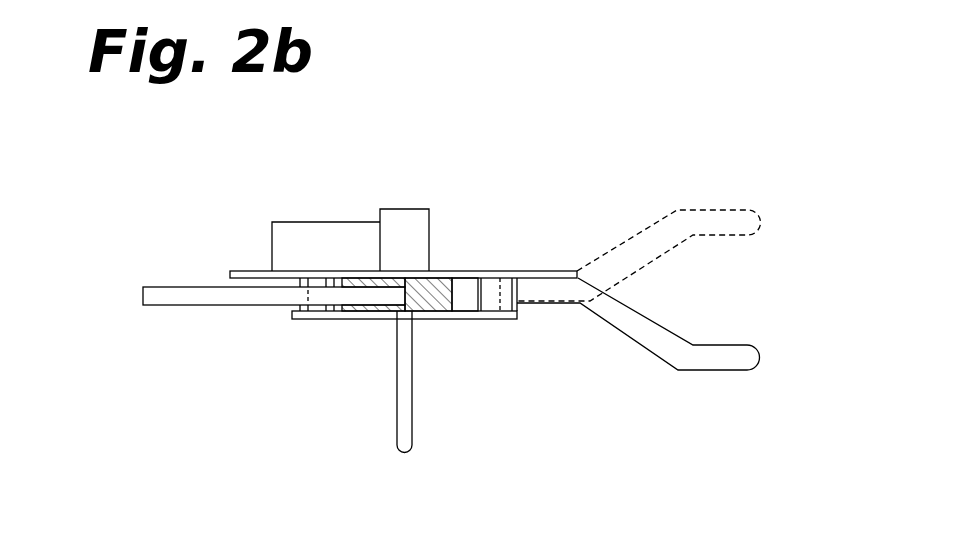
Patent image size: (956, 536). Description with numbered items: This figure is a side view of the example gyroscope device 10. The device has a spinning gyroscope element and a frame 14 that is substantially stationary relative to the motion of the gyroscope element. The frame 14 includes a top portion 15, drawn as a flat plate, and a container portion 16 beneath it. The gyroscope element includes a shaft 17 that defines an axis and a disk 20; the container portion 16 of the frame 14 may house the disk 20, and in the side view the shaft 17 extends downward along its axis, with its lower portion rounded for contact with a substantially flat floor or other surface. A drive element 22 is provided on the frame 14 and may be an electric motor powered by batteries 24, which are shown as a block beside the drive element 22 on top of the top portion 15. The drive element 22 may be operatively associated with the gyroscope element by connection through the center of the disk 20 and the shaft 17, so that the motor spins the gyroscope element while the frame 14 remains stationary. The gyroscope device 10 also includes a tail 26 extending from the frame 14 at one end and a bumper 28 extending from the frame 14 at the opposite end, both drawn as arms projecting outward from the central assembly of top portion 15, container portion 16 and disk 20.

The gyroscope device 10 is at (569, 157).
The frame 14 is at (566, 258).
The top portion 15 is at (477, 271).
The container portion 16 is at (315, 321).
The shaft 17 is at (410, 432).
The disk 20 is at (452, 317).
The drive element 22 is at (388, 209).
The batteries 24 is at (275, 222).
The tail 26 is at (665, 323).
The bumper 28 is at (143, 287).